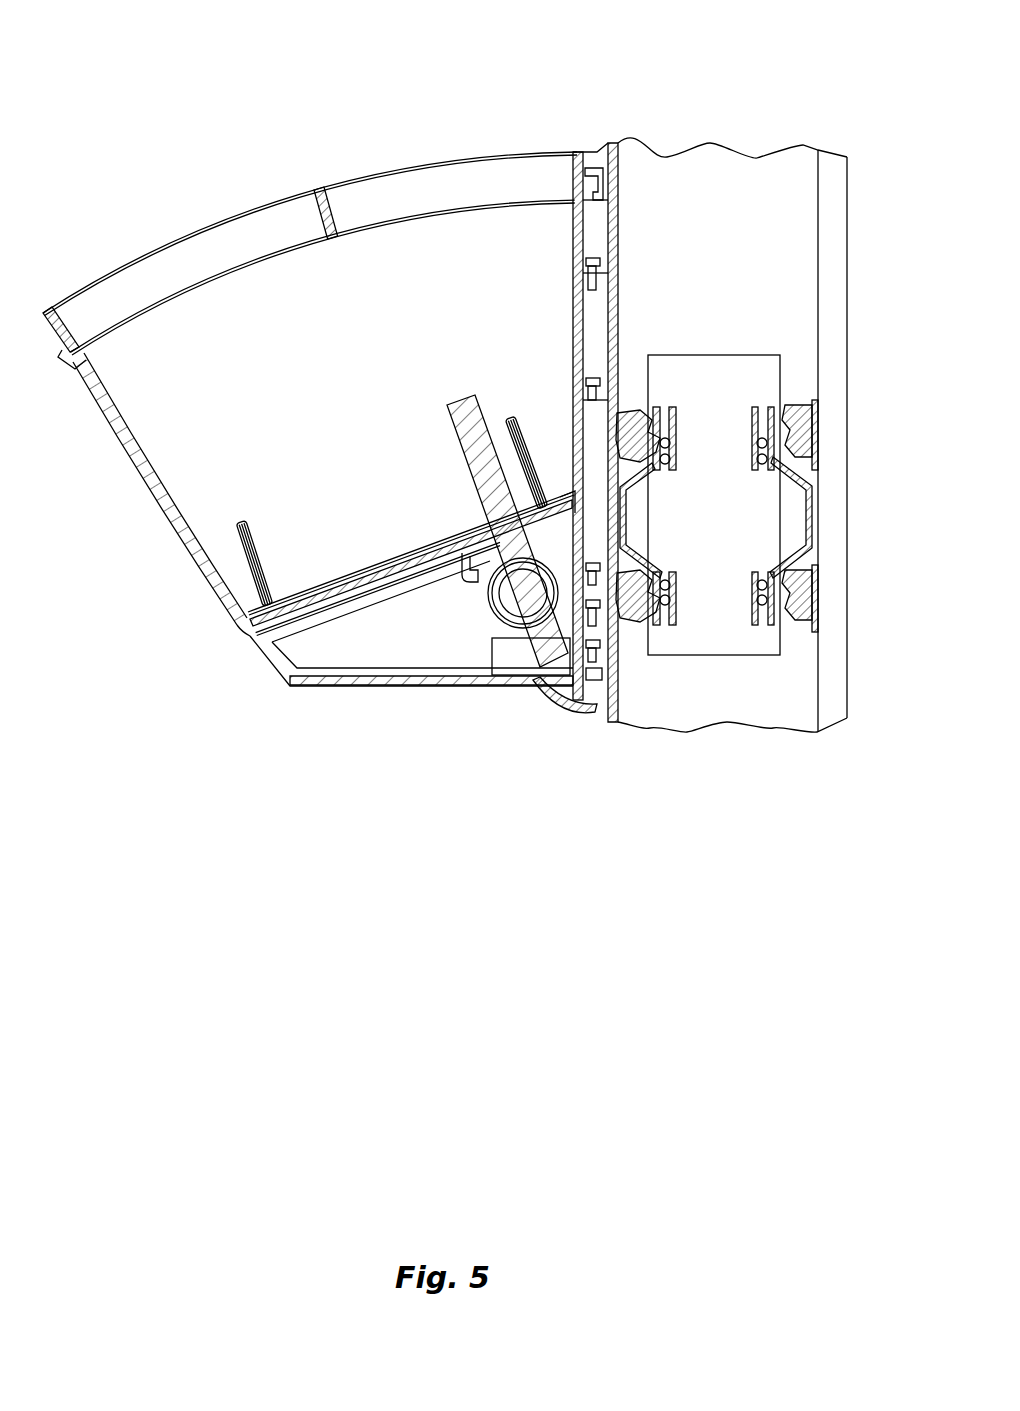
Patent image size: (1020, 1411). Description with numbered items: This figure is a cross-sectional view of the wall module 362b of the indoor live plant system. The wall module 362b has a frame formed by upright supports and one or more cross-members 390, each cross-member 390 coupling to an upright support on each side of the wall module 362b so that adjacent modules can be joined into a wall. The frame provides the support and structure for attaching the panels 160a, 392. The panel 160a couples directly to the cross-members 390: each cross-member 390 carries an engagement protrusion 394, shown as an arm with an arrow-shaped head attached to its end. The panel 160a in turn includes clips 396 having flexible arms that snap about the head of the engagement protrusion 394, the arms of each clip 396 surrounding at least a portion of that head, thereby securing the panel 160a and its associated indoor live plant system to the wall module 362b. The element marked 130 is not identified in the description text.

The wall module 362b is at (651, 62).
The panel 160a is at (610, 155).
The panel 392 is at (845, 178).
The clip 396 is at (622, 410).
The cross-member 390 is at (624, 527).
The engagement protrusion 394 is at (650, 608).
The lower housing 130 is at (375, 686).